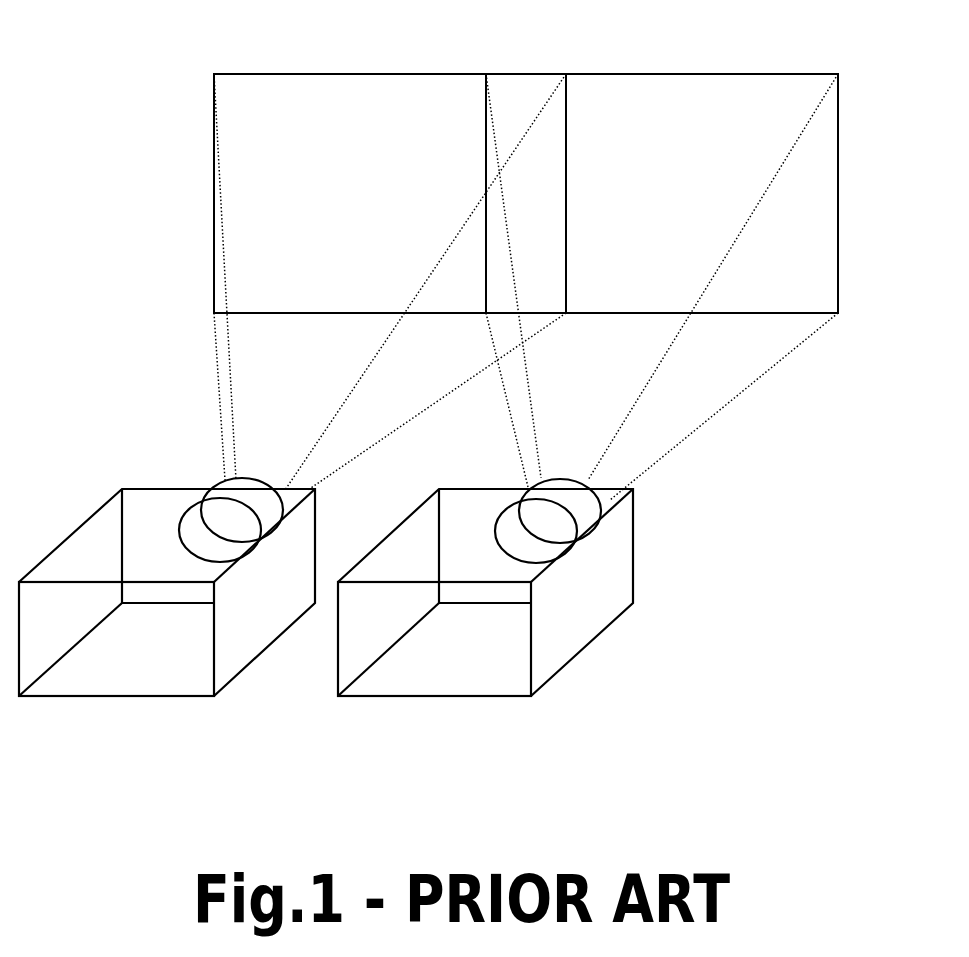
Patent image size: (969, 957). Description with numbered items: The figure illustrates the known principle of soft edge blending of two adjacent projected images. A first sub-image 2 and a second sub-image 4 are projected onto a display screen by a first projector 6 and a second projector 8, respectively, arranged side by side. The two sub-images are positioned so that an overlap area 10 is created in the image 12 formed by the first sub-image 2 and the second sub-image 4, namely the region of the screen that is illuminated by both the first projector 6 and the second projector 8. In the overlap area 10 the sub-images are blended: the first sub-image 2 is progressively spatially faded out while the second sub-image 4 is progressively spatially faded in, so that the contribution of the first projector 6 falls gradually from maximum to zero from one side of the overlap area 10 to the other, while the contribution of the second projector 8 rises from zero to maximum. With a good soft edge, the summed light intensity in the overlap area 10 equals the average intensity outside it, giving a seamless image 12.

The first sub-image 2 is at (257, 185).
The second sub-image 4 is at (787, 292).
The first projector 6 is at (83, 562).
The second projector 8 is at (588, 588).
The overlap area 10 is at (515, 98).
The image 12 is at (757, 57).